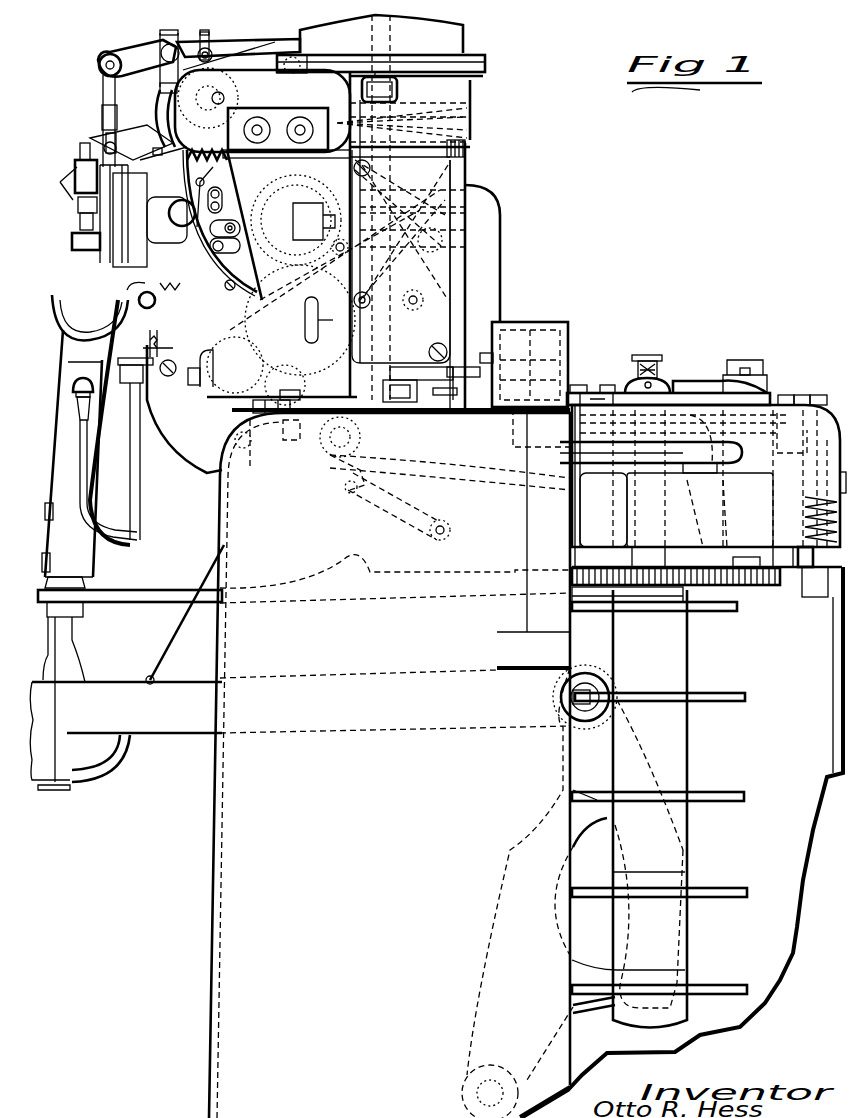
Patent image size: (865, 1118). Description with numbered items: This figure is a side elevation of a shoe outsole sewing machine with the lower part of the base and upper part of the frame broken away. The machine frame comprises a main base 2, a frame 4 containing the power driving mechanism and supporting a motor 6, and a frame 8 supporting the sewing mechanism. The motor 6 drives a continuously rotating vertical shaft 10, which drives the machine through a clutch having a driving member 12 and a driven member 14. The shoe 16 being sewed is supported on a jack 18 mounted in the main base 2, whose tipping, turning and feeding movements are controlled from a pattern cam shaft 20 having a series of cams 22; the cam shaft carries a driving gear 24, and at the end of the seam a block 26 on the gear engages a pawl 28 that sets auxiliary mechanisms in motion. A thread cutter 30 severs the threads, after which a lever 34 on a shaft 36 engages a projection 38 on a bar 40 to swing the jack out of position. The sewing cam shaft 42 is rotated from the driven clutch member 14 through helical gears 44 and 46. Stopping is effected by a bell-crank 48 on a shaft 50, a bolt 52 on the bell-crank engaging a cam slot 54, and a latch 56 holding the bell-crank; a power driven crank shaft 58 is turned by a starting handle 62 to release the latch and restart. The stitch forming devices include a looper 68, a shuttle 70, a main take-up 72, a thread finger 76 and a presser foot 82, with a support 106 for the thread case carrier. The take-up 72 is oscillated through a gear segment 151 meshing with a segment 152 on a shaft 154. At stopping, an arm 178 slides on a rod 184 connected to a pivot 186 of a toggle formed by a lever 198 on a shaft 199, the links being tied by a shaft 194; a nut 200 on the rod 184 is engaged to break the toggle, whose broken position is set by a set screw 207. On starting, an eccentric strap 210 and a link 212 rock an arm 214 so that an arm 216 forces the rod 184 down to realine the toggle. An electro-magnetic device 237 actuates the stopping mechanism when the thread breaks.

The main base 2 is at (221, 820).
The frame 4 is at (470, 262).
The motor 6 is at (466, 40).
The frame 8 is at (110, 147).
The vertical shaft 10 is at (400, 82).
The driving member 12 is at (470, 163).
The driven member 14 is at (470, 185).
The shoe 16 is at (127, 318).
The jack 18 is at (80, 368).
The pattern cam shaft 20 is at (680, 762).
The cams 22 is at (723, 887).
The driving gear 24 is at (696, 588).
The block 26 is at (767, 588).
The pawl 28 is at (790, 590).
The thread cutter 30 is at (78, 222).
The lever 34 is at (385, 500).
The shaft 36 is at (330, 462).
The projection 38 is at (372, 562).
The bar 40 is at (147, 595).
The sewing cam shaft 42 is at (300, 207).
The helical gear 44 is at (470, 212).
The helical gear 46 is at (260, 258).
The bell-crank 48 is at (305, 272).
The shaft 50 is at (305, 243).
The bolt 52 is at (345, 300).
The cam slot 54 is at (405, 262).
The latch 56 is at (352, 322).
The power driven shaft 58 is at (300, 130).
The starting handle 62 is at (182, 205).
The looper 68 is at (133, 317).
The shuttle 70 is at (120, 270).
The main take-up 72 is at (226, 475).
The thread finger 76 is at (128, 302).
The presser foot 82 is at (130, 290).
The support 106 is at (105, 262).
The gear segment 151 is at (197, 380).
The segment 152 is at (215, 395).
The shaft 154 is at (235, 400).
The arm 178 is at (480, 278).
The rod 184 is at (470, 297).
The pivot 186 is at (378, 337).
The shaft 194 is at (325, 440).
The lever 198 is at (432, 350).
The shaft 199 is at (372, 432).
The nut 200 is at (470, 246).
The set screw 207 is at (362, 408).
The eccentric strap 210 is at (330, 67).
The link 212 is at (467, 117).
The arm 214 is at (470, 190).
The arm 216 is at (480, 228).
The electro-magnetic device 237 is at (566, 330).